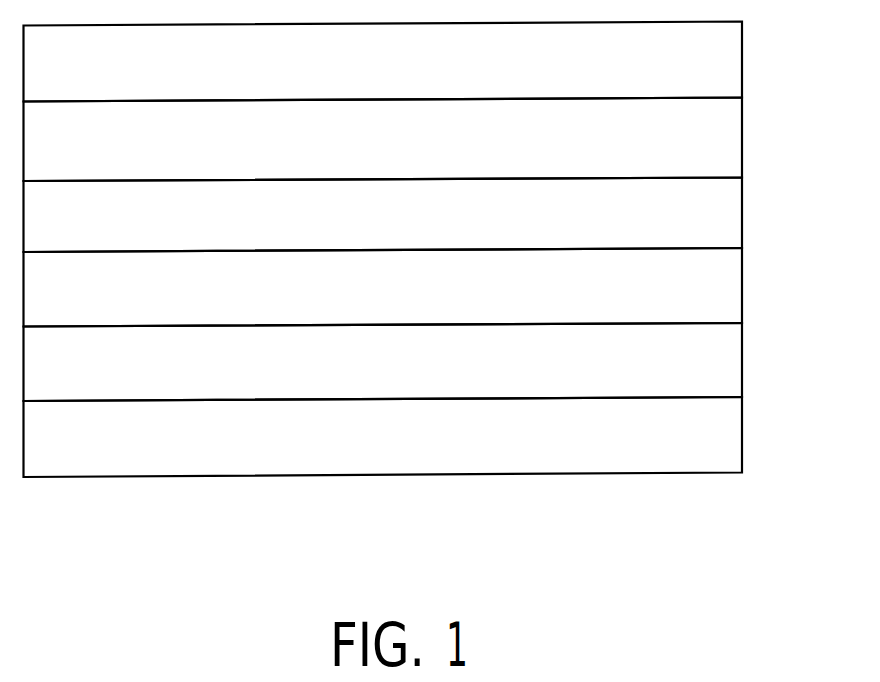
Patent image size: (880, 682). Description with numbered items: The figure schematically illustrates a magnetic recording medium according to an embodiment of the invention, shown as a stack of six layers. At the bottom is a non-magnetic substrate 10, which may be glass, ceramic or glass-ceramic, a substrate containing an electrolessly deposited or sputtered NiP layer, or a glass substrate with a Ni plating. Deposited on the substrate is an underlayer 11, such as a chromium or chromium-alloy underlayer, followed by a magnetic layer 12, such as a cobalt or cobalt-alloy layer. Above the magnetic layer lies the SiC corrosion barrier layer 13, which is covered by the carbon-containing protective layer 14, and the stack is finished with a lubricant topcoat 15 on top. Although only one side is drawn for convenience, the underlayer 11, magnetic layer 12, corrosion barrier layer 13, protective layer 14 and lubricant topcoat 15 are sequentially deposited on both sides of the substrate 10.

The non-magnetic substrate 10 is at (742, 430).
The underlayer 11 is at (742, 351).
The magnetic layer 12 is at (742, 285).
The SiC corrosion barrier layer 13 is at (742, 211).
The carbon-containing protective layer 14 is at (742, 136).
The lubricant topcoat 15 is at (742, 58).